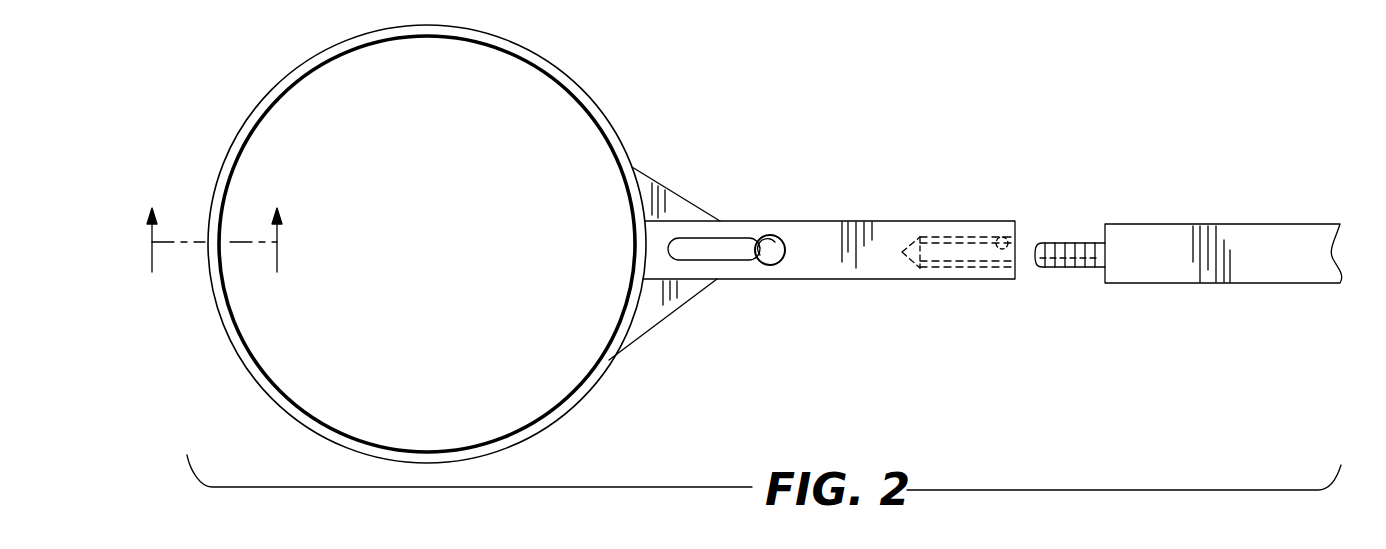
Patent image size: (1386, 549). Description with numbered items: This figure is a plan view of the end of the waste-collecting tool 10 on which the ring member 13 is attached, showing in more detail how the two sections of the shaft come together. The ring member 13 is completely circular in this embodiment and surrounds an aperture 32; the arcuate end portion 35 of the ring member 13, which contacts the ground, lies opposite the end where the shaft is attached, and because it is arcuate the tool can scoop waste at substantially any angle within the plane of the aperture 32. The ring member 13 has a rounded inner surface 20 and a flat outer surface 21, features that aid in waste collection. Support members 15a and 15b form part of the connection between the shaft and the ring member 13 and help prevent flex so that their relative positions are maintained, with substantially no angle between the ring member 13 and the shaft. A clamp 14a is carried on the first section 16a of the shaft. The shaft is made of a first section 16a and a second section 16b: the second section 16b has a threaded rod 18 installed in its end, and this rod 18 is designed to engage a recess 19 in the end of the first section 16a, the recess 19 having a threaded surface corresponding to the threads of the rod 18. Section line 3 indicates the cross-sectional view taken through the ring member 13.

The tool 10 is at (1027, 315).
The ring member 13 is at (550, 77).
The clamp 14a is at (760, 238).
The support member 15a is at (682, 208).
The support member 15b is at (655, 303).
The first section 16a is at (885, 240).
The second section 16b is at (1248, 247).
The threaded rod 18 is at (1072, 243).
The recess 19 is at (1000, 220).
The inner surface 20 is at (241, 153).
The outer surface 21 is at (243, 121).
The aperture 32 is at (507, 343).
The end portion 35 is at (208, 243).
The section line 3- 3 is at (215, 262).